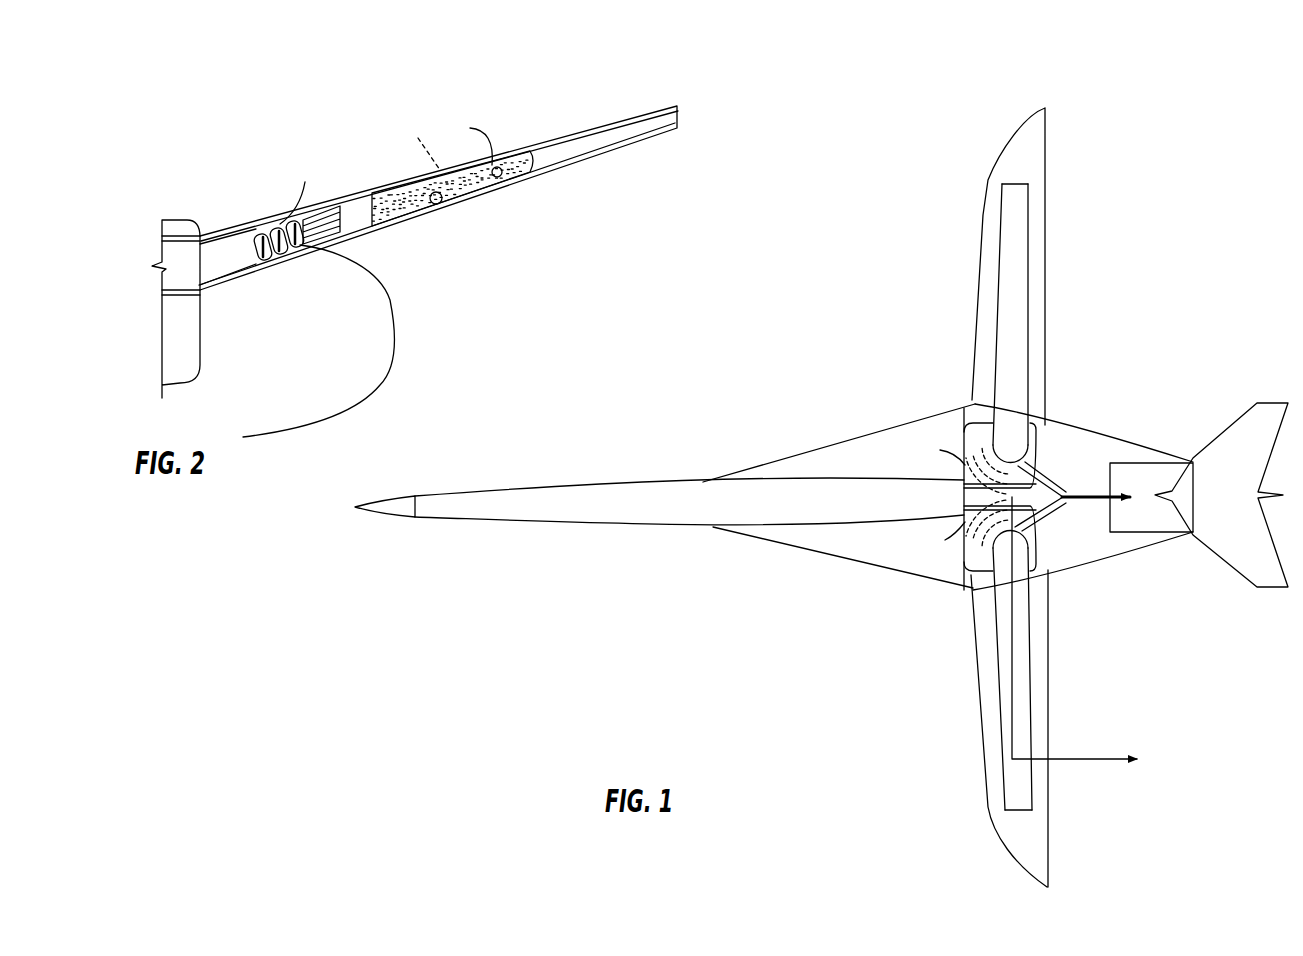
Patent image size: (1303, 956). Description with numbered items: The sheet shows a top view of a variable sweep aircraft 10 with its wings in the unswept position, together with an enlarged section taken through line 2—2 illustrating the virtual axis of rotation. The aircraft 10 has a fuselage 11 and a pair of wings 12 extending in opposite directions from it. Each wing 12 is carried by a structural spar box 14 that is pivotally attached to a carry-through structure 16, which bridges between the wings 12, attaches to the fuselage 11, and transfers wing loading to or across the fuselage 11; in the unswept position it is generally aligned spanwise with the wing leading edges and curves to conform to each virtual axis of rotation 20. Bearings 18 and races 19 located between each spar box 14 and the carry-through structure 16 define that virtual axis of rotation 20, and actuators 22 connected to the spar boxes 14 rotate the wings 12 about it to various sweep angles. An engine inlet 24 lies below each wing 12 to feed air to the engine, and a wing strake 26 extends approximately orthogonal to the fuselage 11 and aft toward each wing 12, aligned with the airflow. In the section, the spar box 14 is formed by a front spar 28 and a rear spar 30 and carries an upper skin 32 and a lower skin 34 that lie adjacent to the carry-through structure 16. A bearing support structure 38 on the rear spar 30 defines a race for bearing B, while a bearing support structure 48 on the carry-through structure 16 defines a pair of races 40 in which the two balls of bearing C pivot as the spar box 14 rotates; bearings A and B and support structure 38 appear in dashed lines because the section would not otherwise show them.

In FIG. 1, the variable sweep aircraft 10 is at (662, 448).
In FIG. 2, the fuselage 11 is at (162, 328).
In FIG. 1, the fuselage 11 is at (750, 502).
In FIG. 2, the wings 12 is at (603, 119).
In FIG. 1, the wings 12 is at (983, 218).
In FIG. 2, the structural spar box 14 is at (340, 197).
In FIG. 1, the structural spar box 14 is at (1015, 310).
In FIG. 2, the carry-through structure 16 is at (246, 270).
In FIG. 1, the carry-through structure 16 is at (957, 483).
In FIG. 1, the bearings 18 is at (963, 420).
In FIG. 1, the bearing races 19 is at (947, 430).
In FIG. 1, the virtual axis of rotation 20 is at (1013, 430).
In FIG. 1, the actuators 22 is at (1062, 488).
In FIG. 2, the engine inlet 24 is at (432, 304).
In FIG. 1, the wing strake 26 is at (880, 538).
In FIG. 1, the front spar 28 is at (1000, 262).
In FIG. 1, the rear spar 30 is at (1030, 218).
In FIG. 2, the upper skin 32 is at (545, 141).
In FIG. 2, the lower skin 34 is at (557, 171).
In FIG. 2, the bearing support structure 38 is at (467, 197).
In FIG. 2, the races 40 is at (258, 262).
In FIG. 2, the bearing support structure 48 is at (252, 238).
In FIG. 1, the section line 2— 2 is at (1085, 629).